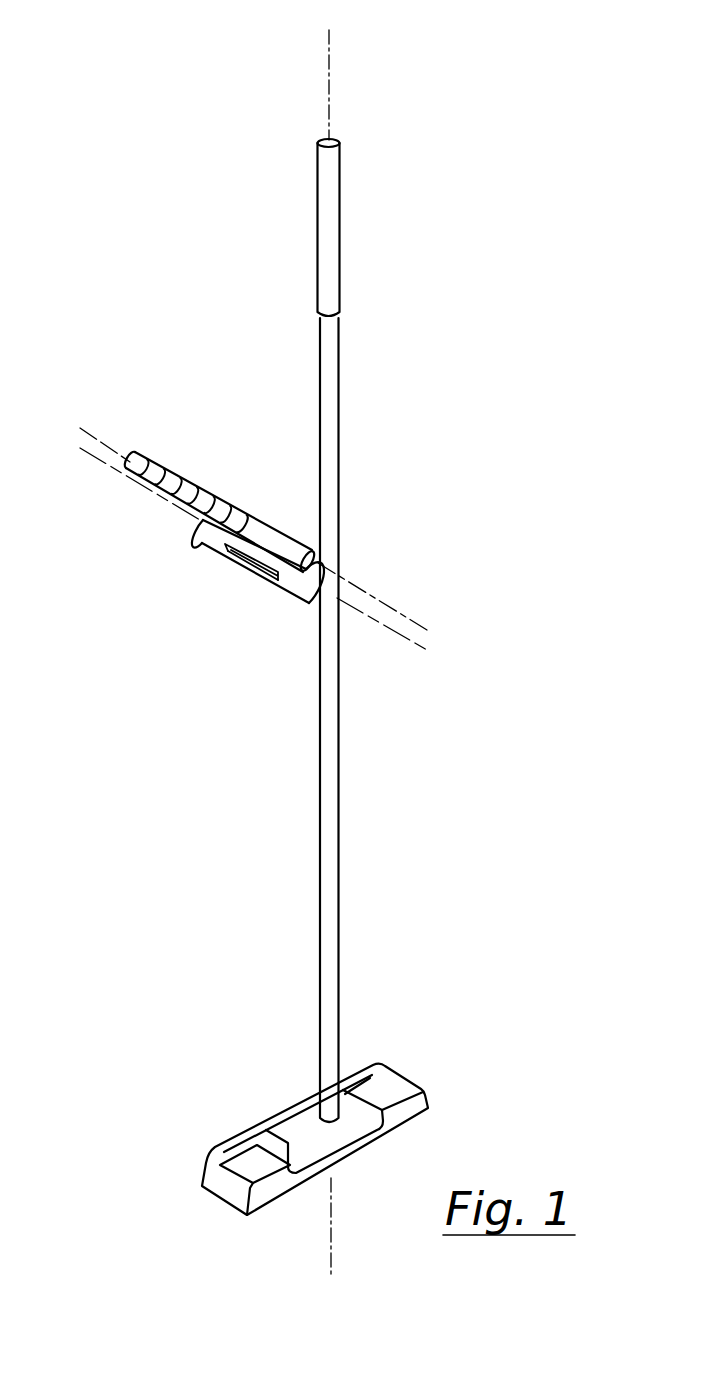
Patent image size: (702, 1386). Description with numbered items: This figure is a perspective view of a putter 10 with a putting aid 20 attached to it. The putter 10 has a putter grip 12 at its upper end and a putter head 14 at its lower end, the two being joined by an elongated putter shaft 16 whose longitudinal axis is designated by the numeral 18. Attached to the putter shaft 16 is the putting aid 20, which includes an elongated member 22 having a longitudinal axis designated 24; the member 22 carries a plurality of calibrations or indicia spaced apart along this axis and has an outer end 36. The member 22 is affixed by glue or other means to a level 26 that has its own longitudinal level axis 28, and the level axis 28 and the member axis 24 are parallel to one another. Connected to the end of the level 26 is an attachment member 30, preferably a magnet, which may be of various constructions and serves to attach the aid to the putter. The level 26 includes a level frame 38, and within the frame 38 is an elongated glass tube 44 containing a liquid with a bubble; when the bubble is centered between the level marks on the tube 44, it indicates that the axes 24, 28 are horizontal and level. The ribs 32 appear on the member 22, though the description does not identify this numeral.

The putter 10 is at (311, 143).
The putter grip 12 is at (333, 200).
The putter head 14 is at (390, 1083).
The putter shaft 16 is at (333, 890).
The longitudinal axis of the putter shaft 18 is at (328, 50).
The putting aid 20 is at (120, 392).
The elongated member 22 is at (293, 541).
The longitudinal axis of member 24 is at (387, 606).
The level 26 is at (200, 538).
The level axis 28 is at (390, 630).
The attachment member 30 is at (313, 597).
The grip ribs 32 is at (214, 492).
The outer end 36 is at (140, 452).
The level frame 38 is at (288, 583).
The glass tube 44 is at (240, 557).